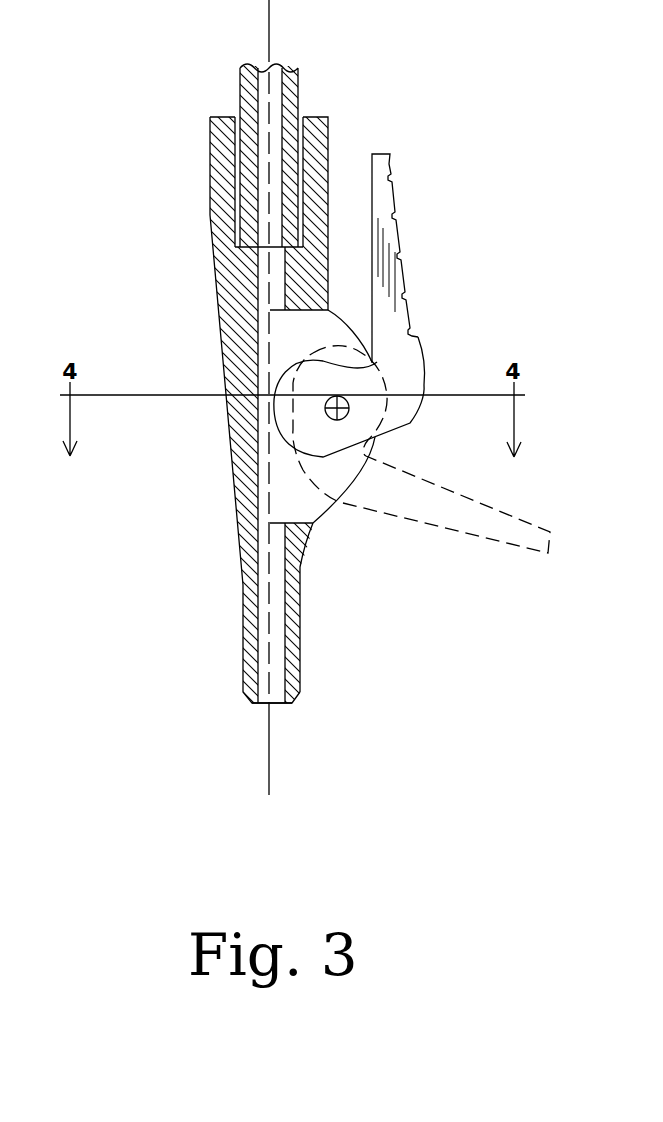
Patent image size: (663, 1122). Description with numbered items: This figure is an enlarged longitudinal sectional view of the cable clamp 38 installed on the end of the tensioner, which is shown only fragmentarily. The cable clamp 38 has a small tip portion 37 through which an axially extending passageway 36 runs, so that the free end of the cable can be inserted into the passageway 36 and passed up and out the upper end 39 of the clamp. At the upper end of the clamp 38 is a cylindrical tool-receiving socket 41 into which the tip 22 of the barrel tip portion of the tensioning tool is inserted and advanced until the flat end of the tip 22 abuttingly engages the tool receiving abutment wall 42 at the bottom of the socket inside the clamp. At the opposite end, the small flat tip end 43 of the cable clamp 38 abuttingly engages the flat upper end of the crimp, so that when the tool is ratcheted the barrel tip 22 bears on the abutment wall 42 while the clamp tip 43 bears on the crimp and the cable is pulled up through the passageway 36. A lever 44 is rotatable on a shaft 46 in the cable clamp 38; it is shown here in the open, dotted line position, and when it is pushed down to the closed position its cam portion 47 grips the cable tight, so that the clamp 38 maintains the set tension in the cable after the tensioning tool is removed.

The barrel tip 22 is at (288, 248).
The axially extending passageway 36 is at (267, 582).
The small tip portion 37 is at (303, 640).
The cable clamp 38 is at (127, 476).
The upper end 39 is at (312, 117).
The cylindrical tool-receiving socket 41 is at (298, 116).
The tool receiving abutment wall 42 is at (235, 246).
The small flat tip end 43 is at (260, 704).
The lever 44 is at (382, 174).
The shaft 46 is at (347, 401).
The cam portion 47 is at (277, 410).